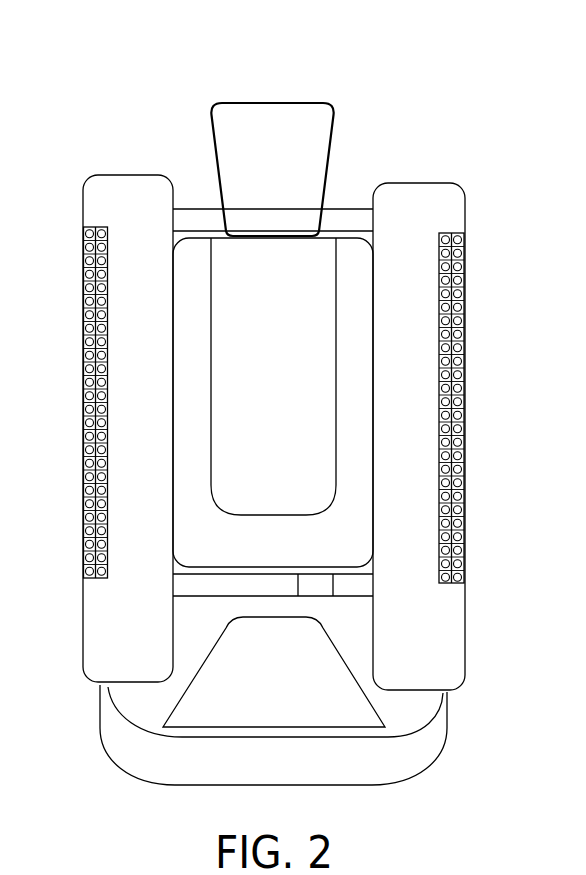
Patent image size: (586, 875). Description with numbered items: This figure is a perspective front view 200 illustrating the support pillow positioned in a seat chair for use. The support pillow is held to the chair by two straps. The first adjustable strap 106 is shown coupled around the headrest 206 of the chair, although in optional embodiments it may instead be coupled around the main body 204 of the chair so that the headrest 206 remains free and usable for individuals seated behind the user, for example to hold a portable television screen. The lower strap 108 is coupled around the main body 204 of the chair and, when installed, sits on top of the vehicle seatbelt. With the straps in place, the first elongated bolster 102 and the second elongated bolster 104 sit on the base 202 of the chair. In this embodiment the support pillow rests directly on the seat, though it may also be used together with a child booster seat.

The perspective front view of the support pillow positioned in a seat 200 is at (137, 64).
The first elongated bolster 102 is at (131, 174).
The second elongated bolster 104 is at (419, 182).
The first adjustable strap 106 is at (344, 208).
The lower strap 108 is at (222, 568).
The base 202 is at (447, 705).
The main body 204 is at (337, 257).
The headrest 206 is at (298, 102).